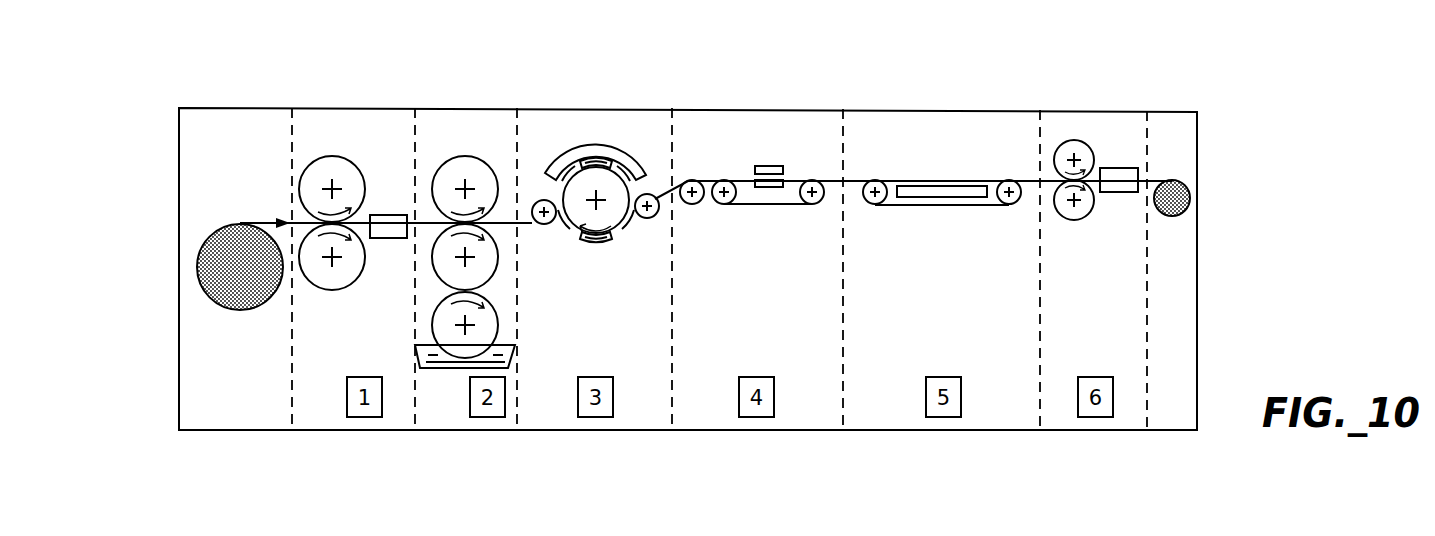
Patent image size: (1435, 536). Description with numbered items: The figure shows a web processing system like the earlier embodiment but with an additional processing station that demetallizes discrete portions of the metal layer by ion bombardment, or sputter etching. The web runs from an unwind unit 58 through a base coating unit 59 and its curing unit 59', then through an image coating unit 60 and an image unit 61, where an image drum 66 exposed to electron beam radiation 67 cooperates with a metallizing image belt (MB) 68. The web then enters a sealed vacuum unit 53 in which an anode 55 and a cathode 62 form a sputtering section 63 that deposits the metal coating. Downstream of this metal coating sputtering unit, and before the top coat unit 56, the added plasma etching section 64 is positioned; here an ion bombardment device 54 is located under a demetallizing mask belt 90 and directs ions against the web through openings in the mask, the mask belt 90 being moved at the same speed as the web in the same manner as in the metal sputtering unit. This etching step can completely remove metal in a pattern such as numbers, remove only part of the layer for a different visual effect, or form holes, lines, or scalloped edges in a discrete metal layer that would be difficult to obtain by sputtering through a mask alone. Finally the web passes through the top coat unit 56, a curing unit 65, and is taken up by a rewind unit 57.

The sealed vacuum unit 53 is at (751, 108).
The ion bombardment device 54 is at (910, 190).
The anode 55 is at (766, 166).
The top coat unit 56 is at (1070, 138).
The rewind unit 57 is at (1169, 181).
The unwind unit 58 is at (205, 228).
The base coating unit 59 is at (236, 322).
The curing unit 59' is at (342, 351).
The image coating unit 60 is at (428, 368).
The image unit 61 is at (648, 404).
The cathode 62 is at (771, 187).
The sputtering section 63 is at (760, 409).
The plasma etching section 64 is at (957, 405).
The curing unit 65 is at (1120, 180).
The image drum 66 is at (573, 197).
The electron beam radiation 67 is at (628, 156).
The metallizing image belt (MB) 68 is at (748, 202).
The mask belt 90 is at (1215, 292).